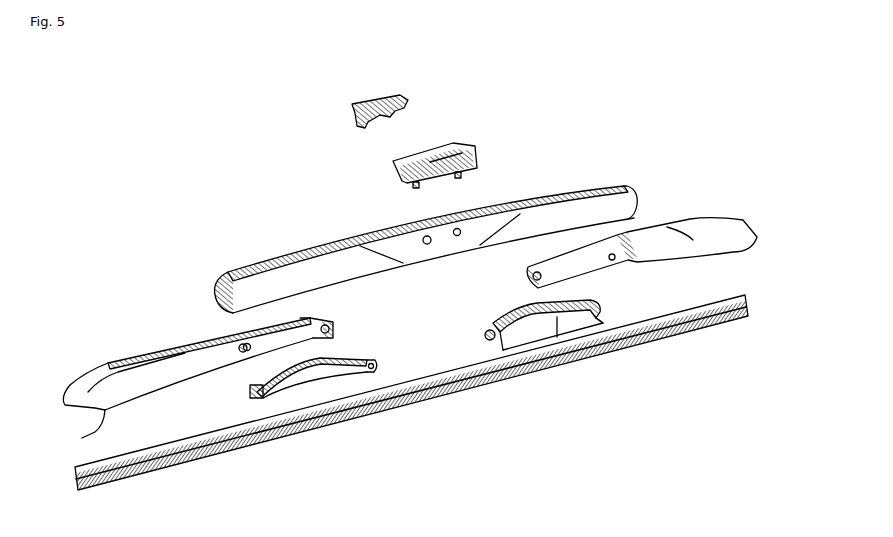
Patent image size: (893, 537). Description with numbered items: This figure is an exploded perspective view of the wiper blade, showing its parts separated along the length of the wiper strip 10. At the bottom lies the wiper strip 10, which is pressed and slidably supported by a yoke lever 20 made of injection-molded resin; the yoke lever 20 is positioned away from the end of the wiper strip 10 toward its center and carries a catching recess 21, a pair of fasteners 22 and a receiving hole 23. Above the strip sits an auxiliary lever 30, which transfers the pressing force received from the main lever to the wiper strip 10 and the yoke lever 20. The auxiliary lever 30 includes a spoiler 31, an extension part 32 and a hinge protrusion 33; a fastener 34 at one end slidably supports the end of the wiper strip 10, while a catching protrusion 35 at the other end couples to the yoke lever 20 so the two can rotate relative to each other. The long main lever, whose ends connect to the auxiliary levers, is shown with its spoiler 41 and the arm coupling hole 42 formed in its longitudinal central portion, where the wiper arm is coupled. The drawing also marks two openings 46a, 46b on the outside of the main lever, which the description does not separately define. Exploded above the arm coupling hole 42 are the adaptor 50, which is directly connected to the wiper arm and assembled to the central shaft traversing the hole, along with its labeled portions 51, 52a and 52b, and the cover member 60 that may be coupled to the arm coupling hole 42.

The wiper strip 10 is at (373, 423).
The yoke lever 20 is at (414, 360).
The catching recess 21 is at (557, 340).
The fastener 22 is at (492, 341).
The receiving hole 23 is at (262, 368).
The auxiliary lever 30 is at (410, 314).
The spoiler 31 is at (118, 364).
The extension part 32 is at (310, 318).
The hinge protrusion 33 is at (243, 352).
The fastener 34 is at (88, 436).
The catching protrusion 35 is at (332, 329).
The spoiler 41 is at (276, 286).
The arm coupling hole 42 is at (363, 231).
The hole 46a is at (428, 246).
The hole 46b is at (458, 237).
The adaptor 50 is at (436, 147).
The connector body 51 is at (438, 174).
The connector leg 52a is at (418, 188).
The connector leg 52b is at (458, 178).
The cover member 60 is at (357, 98).